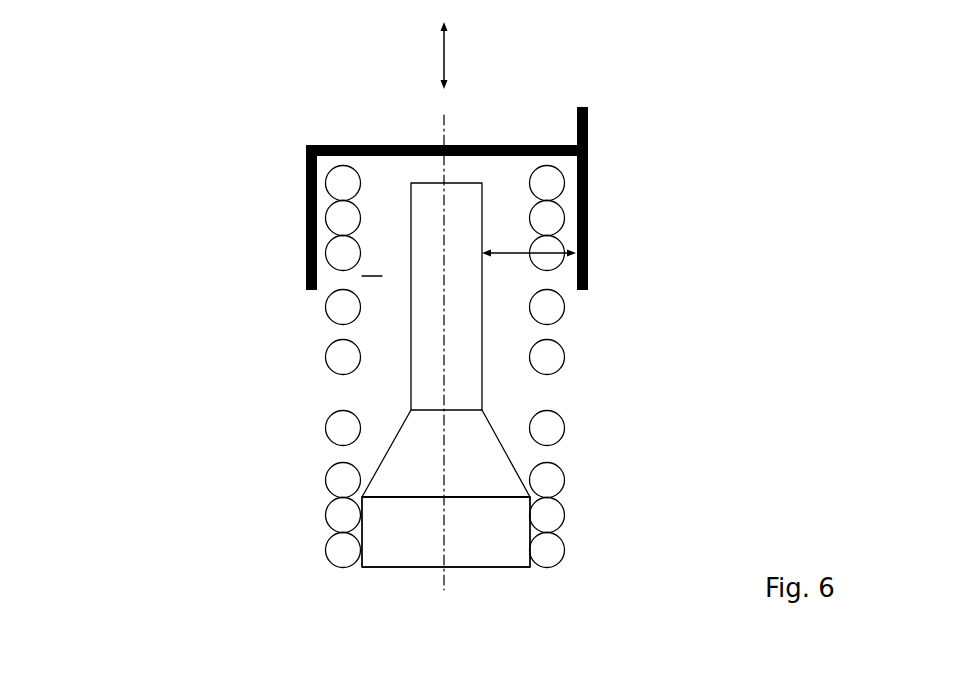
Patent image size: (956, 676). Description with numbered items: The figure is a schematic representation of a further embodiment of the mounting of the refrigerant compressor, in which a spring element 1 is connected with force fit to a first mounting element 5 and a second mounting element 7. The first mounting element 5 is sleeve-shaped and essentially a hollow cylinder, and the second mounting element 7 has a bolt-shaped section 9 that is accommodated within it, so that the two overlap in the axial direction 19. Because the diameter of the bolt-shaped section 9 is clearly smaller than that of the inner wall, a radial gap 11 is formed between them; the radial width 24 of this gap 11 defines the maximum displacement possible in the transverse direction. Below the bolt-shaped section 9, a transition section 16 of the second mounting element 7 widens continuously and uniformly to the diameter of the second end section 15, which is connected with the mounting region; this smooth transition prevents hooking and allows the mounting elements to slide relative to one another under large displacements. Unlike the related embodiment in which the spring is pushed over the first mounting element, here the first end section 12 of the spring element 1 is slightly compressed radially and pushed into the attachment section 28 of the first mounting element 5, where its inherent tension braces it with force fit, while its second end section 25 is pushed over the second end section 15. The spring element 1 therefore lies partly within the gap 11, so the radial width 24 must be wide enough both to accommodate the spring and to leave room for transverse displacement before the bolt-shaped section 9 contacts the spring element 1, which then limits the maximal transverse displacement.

The spring element 1 is at (547, 353).
The first mounting element 5 is at (306, 166).
The second mounting element 7 is at (498, 543).
The bolt-shaped section 9 is at (427, 348).
The radial gap 11 is at (382, 276).
The first end section 12 is at (342, 219).
The second end section 15 is at (446, 532).
The transition section 16 is at (485, 465).
The axial direction 19 is at (444, 41).
The radial width 24 is at (508, 253).
The second end section 25 is at (345, 521).
The attachment section 28 is at (315, 187).